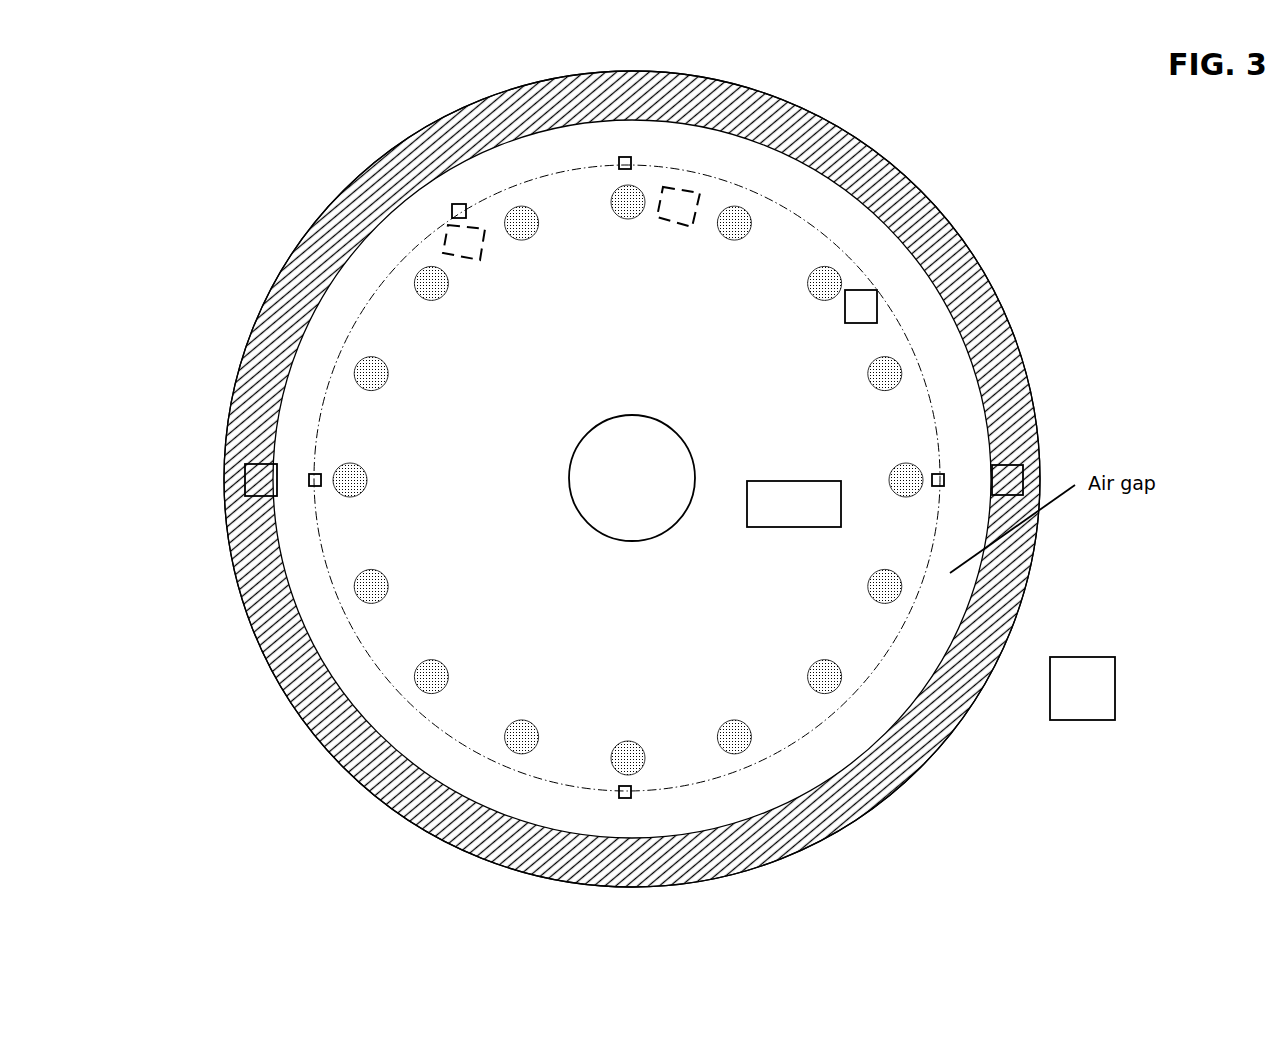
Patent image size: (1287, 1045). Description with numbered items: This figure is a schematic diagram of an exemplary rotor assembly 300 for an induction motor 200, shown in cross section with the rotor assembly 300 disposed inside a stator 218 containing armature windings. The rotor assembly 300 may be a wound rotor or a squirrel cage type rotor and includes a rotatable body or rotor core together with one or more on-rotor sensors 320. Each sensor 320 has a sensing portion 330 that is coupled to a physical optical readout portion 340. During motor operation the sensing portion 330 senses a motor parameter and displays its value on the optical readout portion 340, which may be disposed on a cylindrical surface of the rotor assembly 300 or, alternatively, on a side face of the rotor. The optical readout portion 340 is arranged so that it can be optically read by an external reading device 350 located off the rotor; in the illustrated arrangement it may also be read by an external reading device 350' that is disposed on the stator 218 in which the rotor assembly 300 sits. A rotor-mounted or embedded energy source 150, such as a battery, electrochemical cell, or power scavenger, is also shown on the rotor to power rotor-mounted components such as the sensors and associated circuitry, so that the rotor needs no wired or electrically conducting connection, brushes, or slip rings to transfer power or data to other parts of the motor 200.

The induction motor 200 is at (715, 479).
The stator 218 is at (352, 190).
The rotor assembly 300 is at (627, 478).
The energy source 150 is at (795, 528).
The on-rotor sensor 320 is at (470, 262).
The sensing portion 330 is at (499, 259).
The optical readout portion 340 is at (463, 208).
The external reading device 350 is at (1079, 752).
The external reading device 350' is at (574, 454).